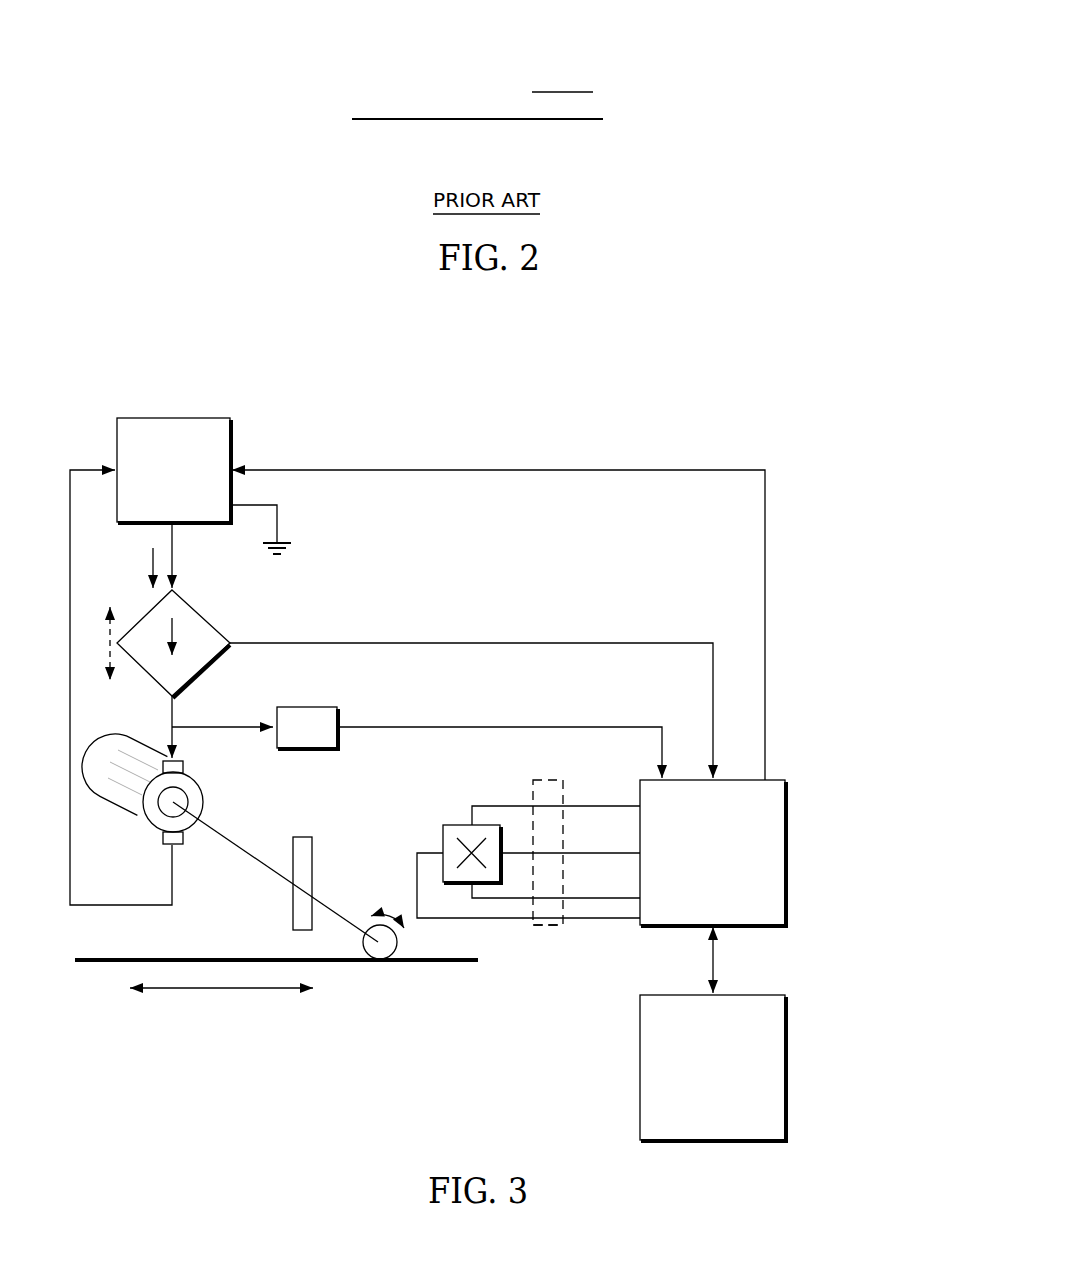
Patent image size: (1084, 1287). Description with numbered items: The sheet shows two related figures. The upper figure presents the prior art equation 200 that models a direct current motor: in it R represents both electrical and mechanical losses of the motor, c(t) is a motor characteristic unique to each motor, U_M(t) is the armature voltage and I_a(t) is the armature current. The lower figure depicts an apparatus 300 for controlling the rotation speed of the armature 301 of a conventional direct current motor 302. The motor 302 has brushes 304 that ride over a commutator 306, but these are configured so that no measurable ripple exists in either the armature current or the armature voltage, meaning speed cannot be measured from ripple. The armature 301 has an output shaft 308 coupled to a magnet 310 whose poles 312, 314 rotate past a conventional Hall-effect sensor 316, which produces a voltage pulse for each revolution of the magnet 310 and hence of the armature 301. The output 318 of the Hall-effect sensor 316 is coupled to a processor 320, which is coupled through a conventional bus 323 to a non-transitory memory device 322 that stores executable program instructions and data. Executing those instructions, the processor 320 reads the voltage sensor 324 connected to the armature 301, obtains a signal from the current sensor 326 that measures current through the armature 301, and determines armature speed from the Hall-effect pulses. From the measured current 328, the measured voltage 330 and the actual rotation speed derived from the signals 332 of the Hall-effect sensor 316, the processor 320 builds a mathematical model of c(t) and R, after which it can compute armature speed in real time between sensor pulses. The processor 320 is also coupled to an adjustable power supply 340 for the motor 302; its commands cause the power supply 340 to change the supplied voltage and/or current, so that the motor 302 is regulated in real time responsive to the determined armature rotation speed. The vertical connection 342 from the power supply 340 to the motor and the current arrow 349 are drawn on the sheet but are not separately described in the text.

In FIG. 2, the equation 200 is at (729, 54).
In FIG. 3, the apparatus 300 is at (368, 1107).
In FIG. 3, the armature 301 is at (150, 811).
In FIG. 3, the direct current motor 302 is at (106, 738).
In FIG. 3, the brushes 304 is at (163, 841).
In FIG. 3, the commutator 306 is at (203, 800).
In FIG. 3, the output shaft 308 is at (240, 852).
In FIG. 3, the magnet 310 is at (312, 842).
In FIG. 3, the pole 312 is at (303, 872).
In FIG. 3, the pole 314 is at (293, 905).
In FIG. 3, the Hall-effect sensor 316 is at (443, 835).
In FIG. 3, the output of the Hall-effect sensor 318 is at (548, 785).
In FIG. 3, the processor 320 is at (788, 853).
In FIG. 3, the non-transitory memory device 322 is at (788, 1068).
In FIG. 3, the bus 323 is at (713, 960).
In FIG. 3, the voltage sensor 324 is at (307, 707).
In FIG. 3, the current sensor 326 is at (204, 620).
In FIG. 3, the measured current 328 is at (470, 643).
In FIG. 3, the measured voltage 330 is at (473, 727).
In FIG. 3, the signals from the Hall-effect sensor 332 is at (548, 923).
In FIG. 3, the adjustable power supply 340 is at (172, 418).
In FIG. 3, the motor voltage line 342 is at (172, 551).
In FIG. 3, the motor current direction 349 is at (152, 562).